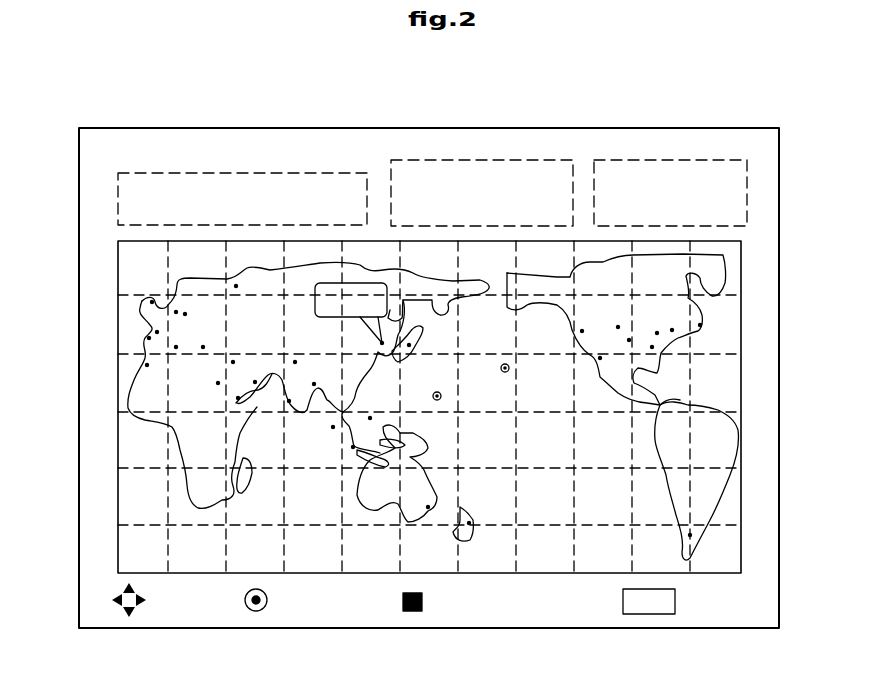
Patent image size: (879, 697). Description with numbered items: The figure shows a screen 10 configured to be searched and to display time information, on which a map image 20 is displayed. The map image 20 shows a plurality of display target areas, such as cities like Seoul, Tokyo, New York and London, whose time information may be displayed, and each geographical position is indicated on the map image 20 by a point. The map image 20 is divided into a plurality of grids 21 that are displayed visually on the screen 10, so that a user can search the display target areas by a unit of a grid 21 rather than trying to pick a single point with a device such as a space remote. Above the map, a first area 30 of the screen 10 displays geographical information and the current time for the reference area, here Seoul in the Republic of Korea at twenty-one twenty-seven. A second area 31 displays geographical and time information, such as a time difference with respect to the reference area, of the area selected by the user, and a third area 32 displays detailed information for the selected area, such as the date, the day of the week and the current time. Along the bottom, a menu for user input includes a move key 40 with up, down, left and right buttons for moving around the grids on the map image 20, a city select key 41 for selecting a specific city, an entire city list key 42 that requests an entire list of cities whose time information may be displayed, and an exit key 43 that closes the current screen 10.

The screen 10 is at (779, 348).
The map image 20 is at (741, 405).
The grid 21 is at (137, 320).
The first area 30 is at (259, 173).
The second area 31 is at (461, 160).
The third area 32 is at (659, 160).
The move key 40 is at (128, 614).
The city select key 41 is at (254, 612).
The entire city list key 42 is at (412, 612).
The exit key 43 is at (646, 615).